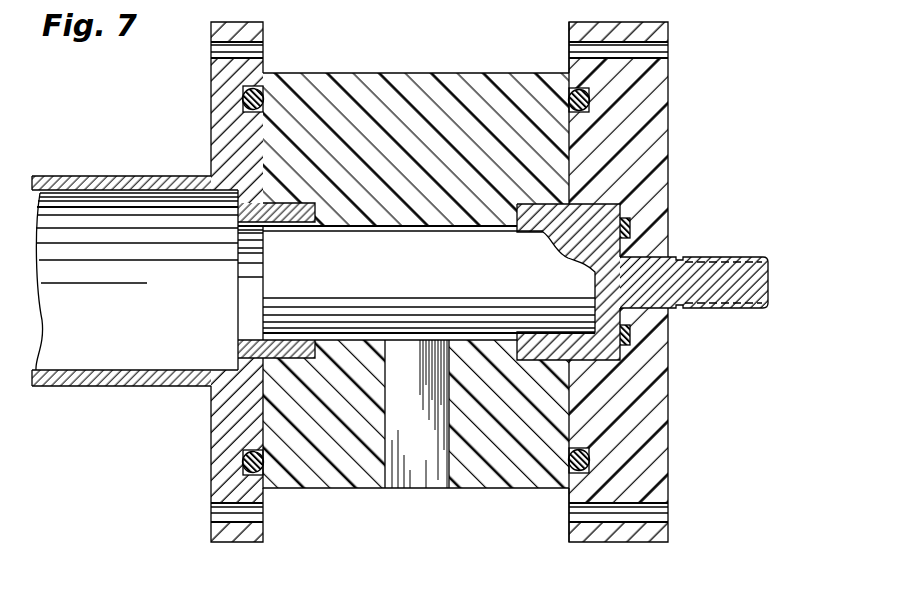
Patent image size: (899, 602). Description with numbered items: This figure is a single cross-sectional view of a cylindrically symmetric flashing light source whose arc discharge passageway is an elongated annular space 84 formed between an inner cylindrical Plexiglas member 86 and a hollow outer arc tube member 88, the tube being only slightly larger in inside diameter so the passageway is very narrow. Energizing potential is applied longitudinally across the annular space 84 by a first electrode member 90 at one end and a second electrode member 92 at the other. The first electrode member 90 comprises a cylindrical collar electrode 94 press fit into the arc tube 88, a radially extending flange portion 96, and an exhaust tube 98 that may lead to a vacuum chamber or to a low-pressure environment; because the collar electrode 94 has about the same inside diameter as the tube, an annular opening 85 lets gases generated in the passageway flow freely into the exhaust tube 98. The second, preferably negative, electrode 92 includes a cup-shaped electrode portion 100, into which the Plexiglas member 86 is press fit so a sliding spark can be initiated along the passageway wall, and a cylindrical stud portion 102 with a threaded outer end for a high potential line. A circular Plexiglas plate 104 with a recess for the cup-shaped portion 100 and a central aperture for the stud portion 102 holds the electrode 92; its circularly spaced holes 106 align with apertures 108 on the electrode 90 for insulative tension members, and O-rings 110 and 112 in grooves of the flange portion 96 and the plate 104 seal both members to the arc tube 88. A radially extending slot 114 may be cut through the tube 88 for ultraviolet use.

The annular space 84 is at (467, 223).
The annular opening 85 is at (263, 335).
The inner cylindrical Plexiglas member 86 is at (429, 283).
The hollow outer member 88 is at (351, 474).
The first electrode member 90 is at (203, 120).
The second electrode member 92 is at (697, 251).
The cylindrical collar electrode 94 is at (318, 201).
The radially extending flange portion 96 is at (211, 438).
The exhaust tube 98 is at (140, 167).
The cup-shaped electrode portion 100 is at (607, 204).
The cylindrical stud portion 102 is at (728, 308).
The circular Plexiglas plate 104 is at (665, 100).
The circularly spaced holes 106 is at (668, 45).
The apertures 108 is at (265, 45).
The O-ring 110 is at (266, 98).
The O-ring 112 is at (568, 90).
The radially extending slot 114 is at (447, 482).